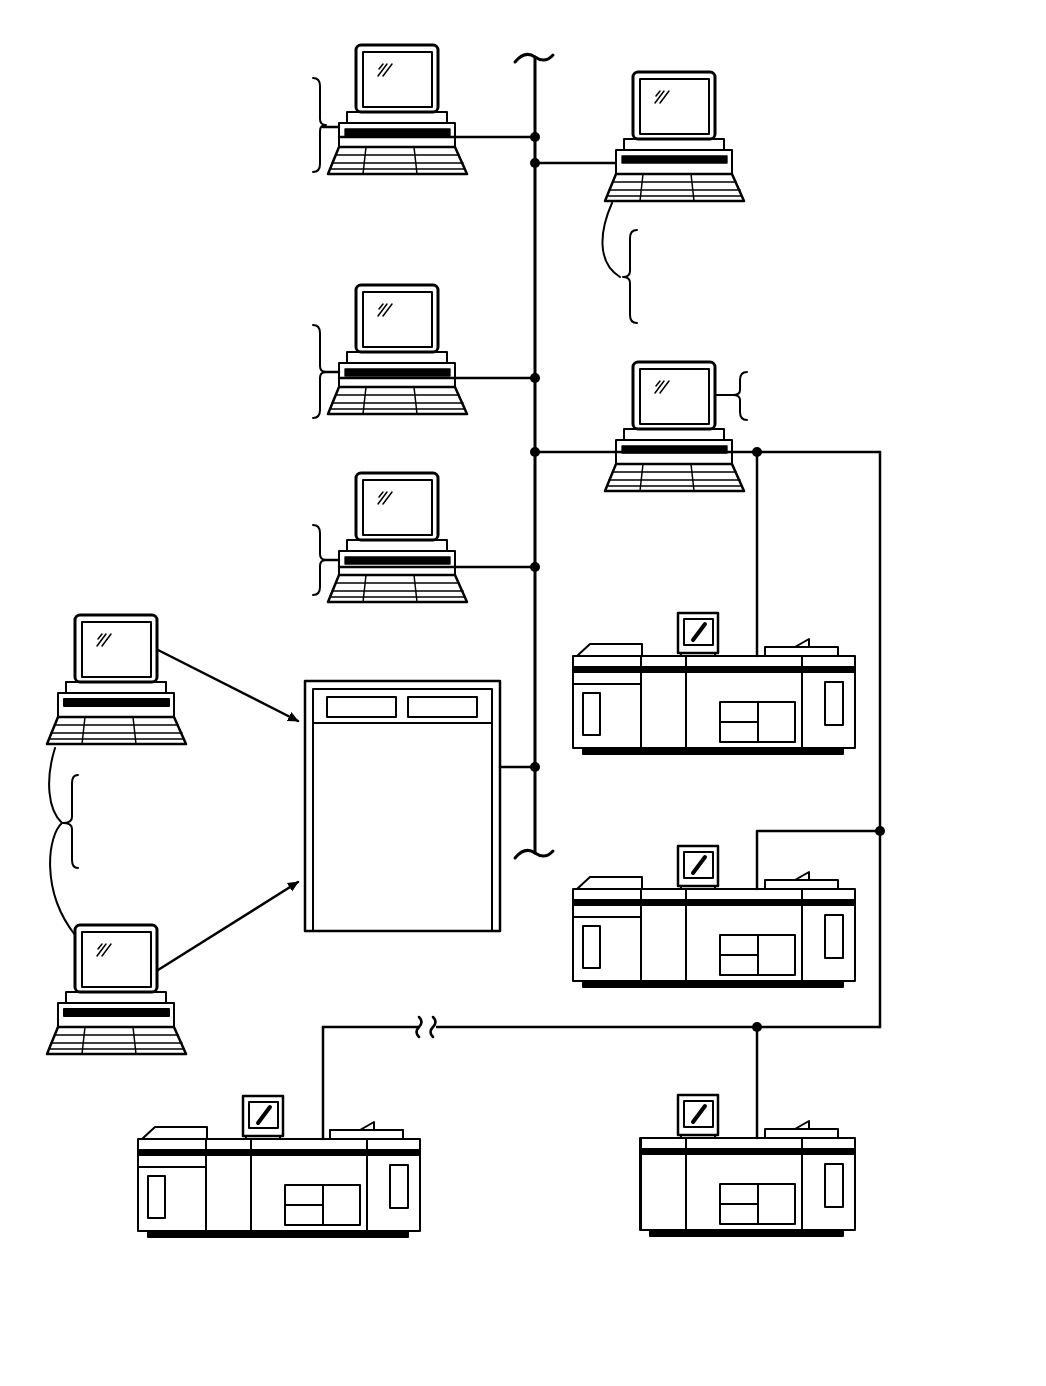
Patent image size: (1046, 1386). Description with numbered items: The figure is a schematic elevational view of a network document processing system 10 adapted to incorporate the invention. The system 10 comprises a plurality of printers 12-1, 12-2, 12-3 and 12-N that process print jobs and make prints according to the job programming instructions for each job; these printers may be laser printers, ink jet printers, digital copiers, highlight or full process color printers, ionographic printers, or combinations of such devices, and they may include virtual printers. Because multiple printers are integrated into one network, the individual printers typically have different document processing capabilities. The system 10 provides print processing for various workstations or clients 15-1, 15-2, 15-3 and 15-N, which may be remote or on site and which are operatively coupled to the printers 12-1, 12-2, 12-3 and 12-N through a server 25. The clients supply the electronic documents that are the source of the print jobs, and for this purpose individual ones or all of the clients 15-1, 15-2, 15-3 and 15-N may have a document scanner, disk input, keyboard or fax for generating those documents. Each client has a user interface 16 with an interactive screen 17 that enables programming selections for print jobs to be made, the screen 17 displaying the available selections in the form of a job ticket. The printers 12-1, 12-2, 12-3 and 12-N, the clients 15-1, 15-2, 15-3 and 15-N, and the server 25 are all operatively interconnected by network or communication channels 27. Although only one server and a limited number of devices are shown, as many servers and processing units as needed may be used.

The network document processing system 10 is at (703, 40).
The printer 12-1 is at (645, 632).
The printer 12-2 is at (645, 862).
The printer 12-3 is at (645, 1122).
The printer 12-N is at (467, 1109).
The client 15-1 is at (512, 24).
The client 15-2 is at (512, 264).
The client 15-3 is at (512, 452).
The client 15-N is at (660, 66).
The user interface 16 is at (392, 183).
The interactive screen 17 is at (365, 52).
The server 25 is at (627, 375).
The network or communication channels 27 is at (532, 187).